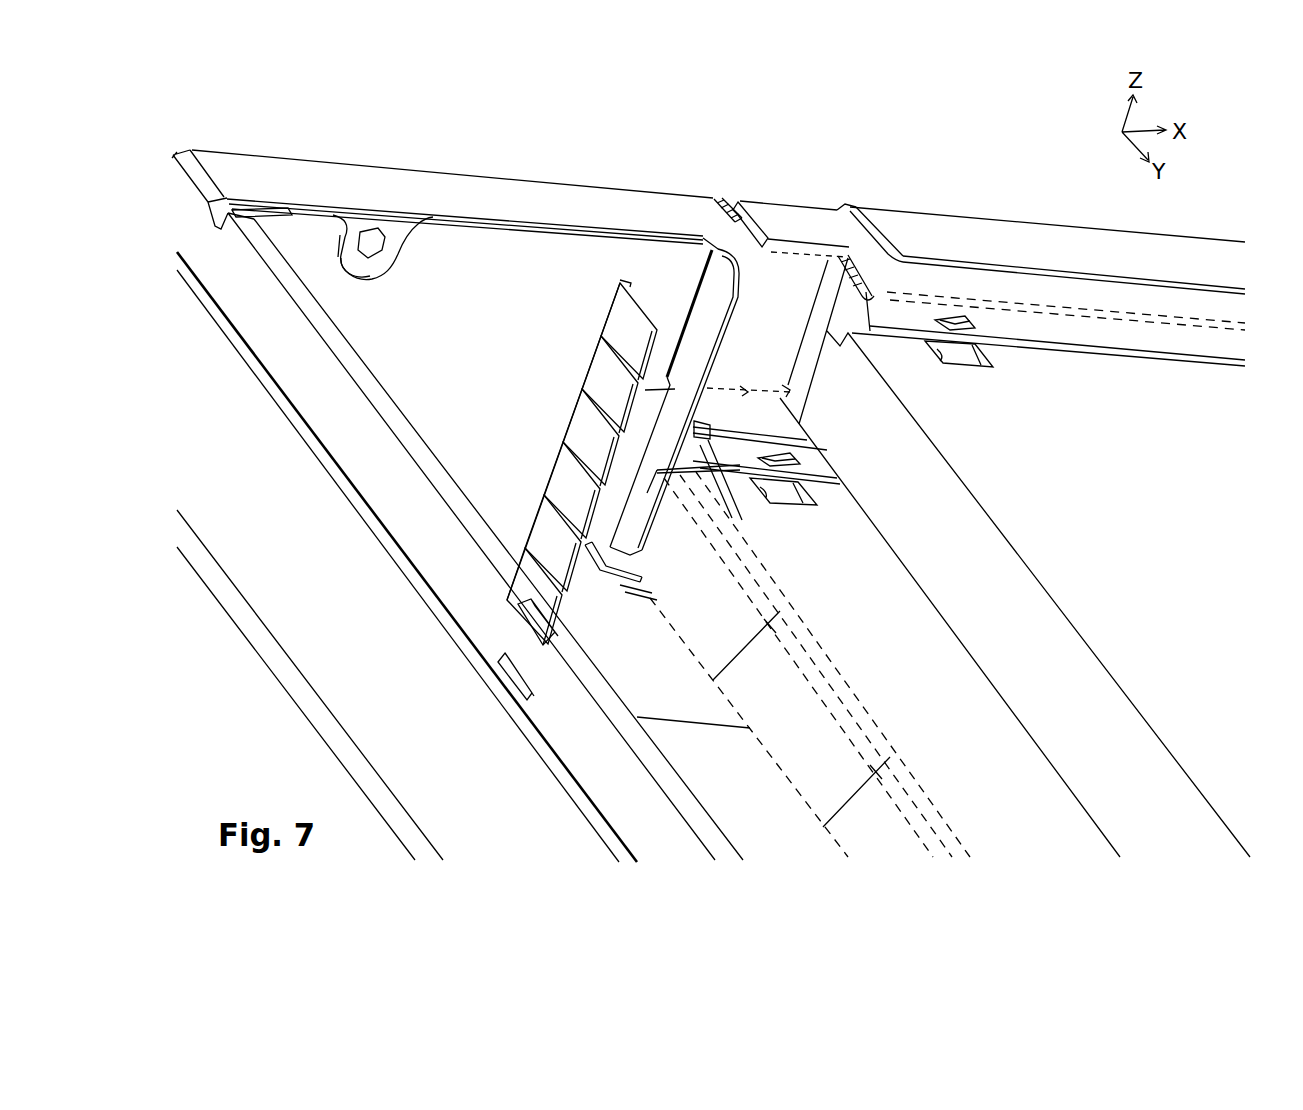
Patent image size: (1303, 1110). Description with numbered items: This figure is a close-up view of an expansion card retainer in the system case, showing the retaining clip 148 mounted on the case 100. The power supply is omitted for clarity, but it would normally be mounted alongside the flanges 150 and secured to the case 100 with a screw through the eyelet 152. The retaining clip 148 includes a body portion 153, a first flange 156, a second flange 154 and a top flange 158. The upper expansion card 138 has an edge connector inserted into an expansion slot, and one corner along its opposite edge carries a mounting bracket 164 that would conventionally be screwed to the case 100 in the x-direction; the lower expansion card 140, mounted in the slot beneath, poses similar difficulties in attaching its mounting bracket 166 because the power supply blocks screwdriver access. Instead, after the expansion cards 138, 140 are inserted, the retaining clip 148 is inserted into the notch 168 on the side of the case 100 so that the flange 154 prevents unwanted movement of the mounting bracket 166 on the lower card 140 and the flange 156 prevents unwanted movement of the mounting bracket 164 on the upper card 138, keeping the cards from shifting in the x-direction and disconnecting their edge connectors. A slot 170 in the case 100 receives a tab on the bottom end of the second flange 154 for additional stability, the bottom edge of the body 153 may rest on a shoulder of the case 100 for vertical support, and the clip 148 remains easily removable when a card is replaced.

The case 100 is at (435, 185).
The expansion card 138 is at (1115, 570).
The expansion card 140 is at (915, 686).
The retaining clip 148 is at (992, 132).
The flanges 150 is at (570, 460).
The eyelet 152 is at (378, 256).
The body portion 153 is at (778, 358).
The second flange 154 is at (697, 343).
The first flange 156 is at (825, 317).
The top flange 158 is at (790, 212).
The mounting bracket 164 is at (870, 268).
The mounting bracket 166 is at (700, 456).
The notch 168 is at (727, 197).
The slot 170 is at (607, 571).